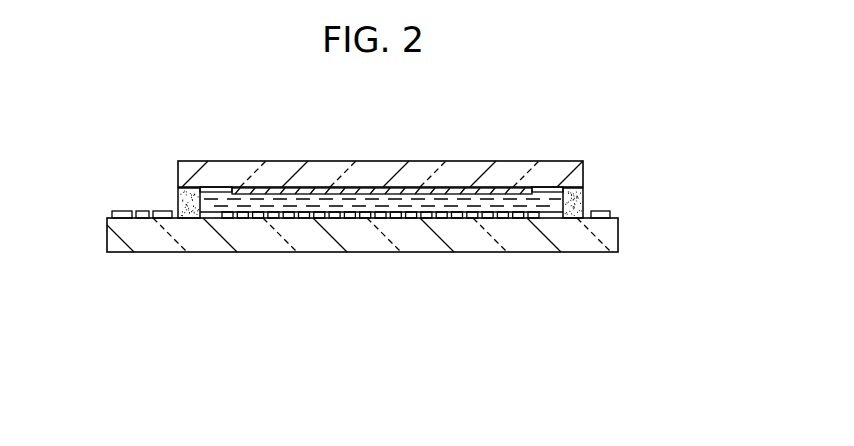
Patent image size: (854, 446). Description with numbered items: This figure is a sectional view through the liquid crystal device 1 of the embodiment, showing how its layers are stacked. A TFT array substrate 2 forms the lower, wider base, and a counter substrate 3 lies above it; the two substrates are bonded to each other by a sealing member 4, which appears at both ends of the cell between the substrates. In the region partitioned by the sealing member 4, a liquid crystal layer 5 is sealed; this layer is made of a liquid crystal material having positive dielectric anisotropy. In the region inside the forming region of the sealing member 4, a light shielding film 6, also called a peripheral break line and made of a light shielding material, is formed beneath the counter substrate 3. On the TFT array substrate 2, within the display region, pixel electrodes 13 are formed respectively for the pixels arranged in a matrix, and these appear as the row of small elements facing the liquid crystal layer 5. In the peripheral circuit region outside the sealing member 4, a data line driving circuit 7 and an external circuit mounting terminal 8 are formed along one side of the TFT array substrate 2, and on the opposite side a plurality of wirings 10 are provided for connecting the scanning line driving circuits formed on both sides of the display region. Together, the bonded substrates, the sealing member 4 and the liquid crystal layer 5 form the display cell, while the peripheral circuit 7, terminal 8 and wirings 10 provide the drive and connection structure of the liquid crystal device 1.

The liquid crystal device 1 is at (454, 128).
The TFT array substrate 2 is at (470, 243).
The counter substrate 3 is at (387, 160).
The sealing member 4 is at (190, 218).
The liquid crystal layer 5 is at (390, 200).
The light shielding film 6 is at (223, 187).
The data line driving circuit 7 is at (162, 210).
The external circuit mounting terminal 8 is at (120, 210).
The wirings 10 is at (599, 218).
The pixel electrodes 13 is at (279, 218).